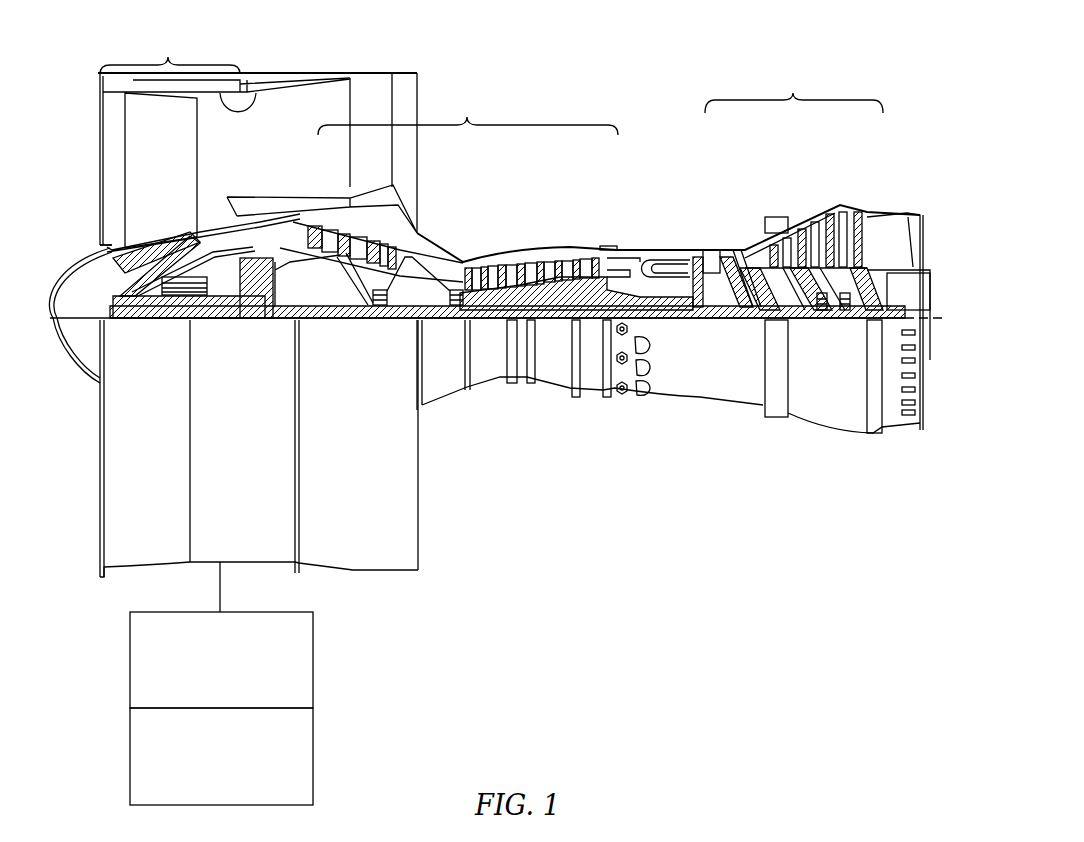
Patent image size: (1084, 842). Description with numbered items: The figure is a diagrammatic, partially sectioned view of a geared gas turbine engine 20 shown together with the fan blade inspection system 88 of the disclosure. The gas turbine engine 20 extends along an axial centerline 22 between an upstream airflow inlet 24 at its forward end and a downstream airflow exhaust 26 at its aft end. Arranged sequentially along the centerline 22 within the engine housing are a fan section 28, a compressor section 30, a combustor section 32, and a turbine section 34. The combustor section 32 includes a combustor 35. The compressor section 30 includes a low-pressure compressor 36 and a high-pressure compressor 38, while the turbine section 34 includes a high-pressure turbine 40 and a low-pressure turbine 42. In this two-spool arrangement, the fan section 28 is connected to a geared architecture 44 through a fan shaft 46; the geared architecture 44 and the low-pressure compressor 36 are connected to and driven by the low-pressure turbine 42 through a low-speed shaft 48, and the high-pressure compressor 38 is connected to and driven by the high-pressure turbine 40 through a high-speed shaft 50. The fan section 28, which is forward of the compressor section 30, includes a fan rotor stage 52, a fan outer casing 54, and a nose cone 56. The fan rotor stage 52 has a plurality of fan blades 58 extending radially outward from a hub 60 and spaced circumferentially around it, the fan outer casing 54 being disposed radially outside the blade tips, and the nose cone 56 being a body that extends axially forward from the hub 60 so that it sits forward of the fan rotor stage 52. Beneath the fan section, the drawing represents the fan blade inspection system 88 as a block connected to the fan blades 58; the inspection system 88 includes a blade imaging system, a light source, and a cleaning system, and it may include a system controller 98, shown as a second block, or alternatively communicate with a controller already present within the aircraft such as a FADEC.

The gas turbine engine 20 is at (692, 63).
The axial centerline 22 is at (946, 322).
The upstream airflow inlet 24 is at (93, 145).
The downstream airflow exhaust 26 is at (934, 233).
The fan section 28 is at (258, 124).
The compressor section 30 is at (573, 177).
The combustor section 32 is at (680, 236).
The turbine section 34 is at (794, 191).
The combustor 35 is at (654, 265).
The low-pressure compressor 36 is at (406, 229).
The high-pressure compressor 38 is at (538, 243).
The high-pressure turbine 40 is at (713, 236).
The low-pressure turbine 42 is at (839, 196).
The geared architecture 44 is at (260, 312).
The fan shaft 46 is at (150, 318).
The low-speed shaft 48 is at (706, 320).
The high-speed shaft 50 is at (556, 298).
The fan rotor stage 52 is at (98, 238).
The fan outer casing 54 is at (243, 93).
The nose cone 56 is at (63, 362).
The fan blade 58 is at (174, 185).
The hub 60 is at (130, 277).
The fan blade inspection system 88 is at (233, 697).
The system controller 98 is at (233, 795).